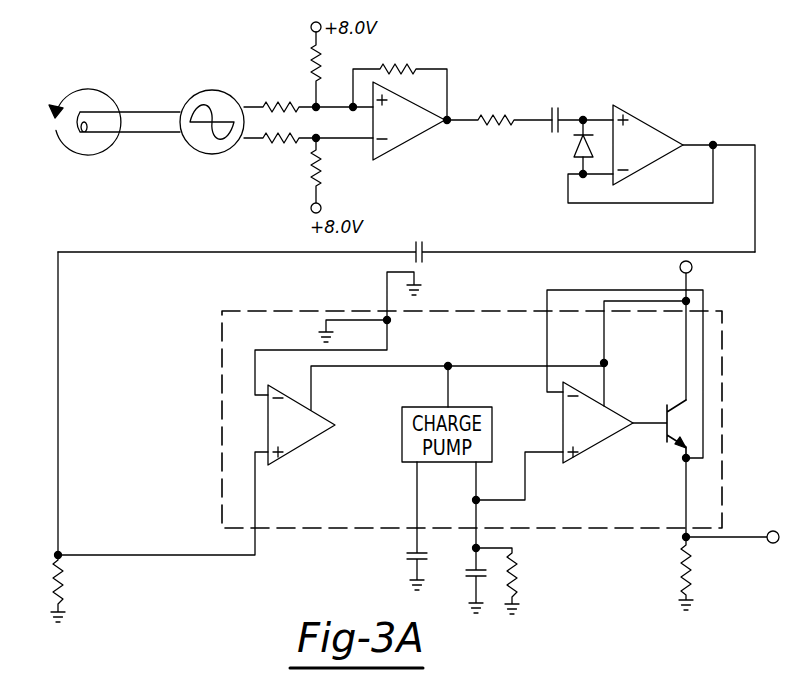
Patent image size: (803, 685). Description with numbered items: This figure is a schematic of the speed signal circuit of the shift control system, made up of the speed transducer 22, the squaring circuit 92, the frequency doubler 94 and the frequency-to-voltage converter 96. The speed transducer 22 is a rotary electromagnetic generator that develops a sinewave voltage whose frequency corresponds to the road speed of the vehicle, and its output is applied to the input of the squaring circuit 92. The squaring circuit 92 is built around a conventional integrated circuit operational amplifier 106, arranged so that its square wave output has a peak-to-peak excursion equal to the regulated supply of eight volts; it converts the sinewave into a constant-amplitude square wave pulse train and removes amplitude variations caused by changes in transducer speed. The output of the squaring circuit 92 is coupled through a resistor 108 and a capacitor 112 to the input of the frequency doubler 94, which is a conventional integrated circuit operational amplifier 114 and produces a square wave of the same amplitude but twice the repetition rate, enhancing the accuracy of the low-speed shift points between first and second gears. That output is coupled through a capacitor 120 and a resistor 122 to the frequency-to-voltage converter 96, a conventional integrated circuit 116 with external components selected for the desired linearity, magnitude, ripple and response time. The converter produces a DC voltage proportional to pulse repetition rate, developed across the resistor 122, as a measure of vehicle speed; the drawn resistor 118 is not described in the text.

The speed transducer 22 is at (231, 80).
The squaring circuit 92 is at (430, 106).
The frequency doubler 94 is at (661, 159).
The frequency-to-voltage converter 96 is at (446, 304).
The operational amplifier 106 is at (407, 143).
The resistor 108 is at (490, 112).
The capacitor 112 is at (558, 108).
The operational amplifier 114 is at (640, 173).
The integrated circuit 116 is at (311, 311).
The output load resistor 118 is at (693, 565).
The capacitor 120 is at (427, 250).
The resistor 122 is at (67, 576).